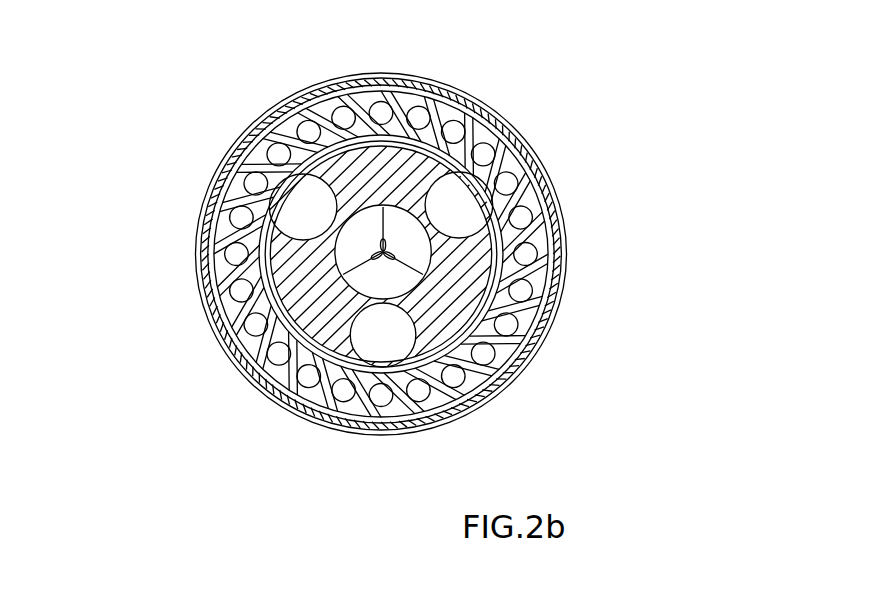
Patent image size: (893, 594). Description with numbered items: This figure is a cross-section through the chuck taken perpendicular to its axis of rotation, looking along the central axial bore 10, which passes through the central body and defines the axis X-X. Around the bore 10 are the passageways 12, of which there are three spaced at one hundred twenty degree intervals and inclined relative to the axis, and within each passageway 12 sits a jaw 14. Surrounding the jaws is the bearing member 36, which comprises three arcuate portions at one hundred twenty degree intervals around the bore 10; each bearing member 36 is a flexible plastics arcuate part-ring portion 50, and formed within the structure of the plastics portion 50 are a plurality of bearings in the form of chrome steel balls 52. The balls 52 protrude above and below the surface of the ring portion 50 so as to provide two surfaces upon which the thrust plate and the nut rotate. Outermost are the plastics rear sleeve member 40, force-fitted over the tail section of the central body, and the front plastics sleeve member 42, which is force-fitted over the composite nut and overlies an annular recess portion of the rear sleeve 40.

The central axial bore 10 is at (400, 254).
The passageways 12 is at (357, 330).
The jaw 14 is at (355, 240).
The bearing member 36 is at (266, 165).
The rear sleeve member 40 is at (487, 390).
The front sleeve member 42 is at (455, 420).
The arcuate part-ring portion 50 is at (306, 103).
The chrome steel balls 52 is at (455, 124).